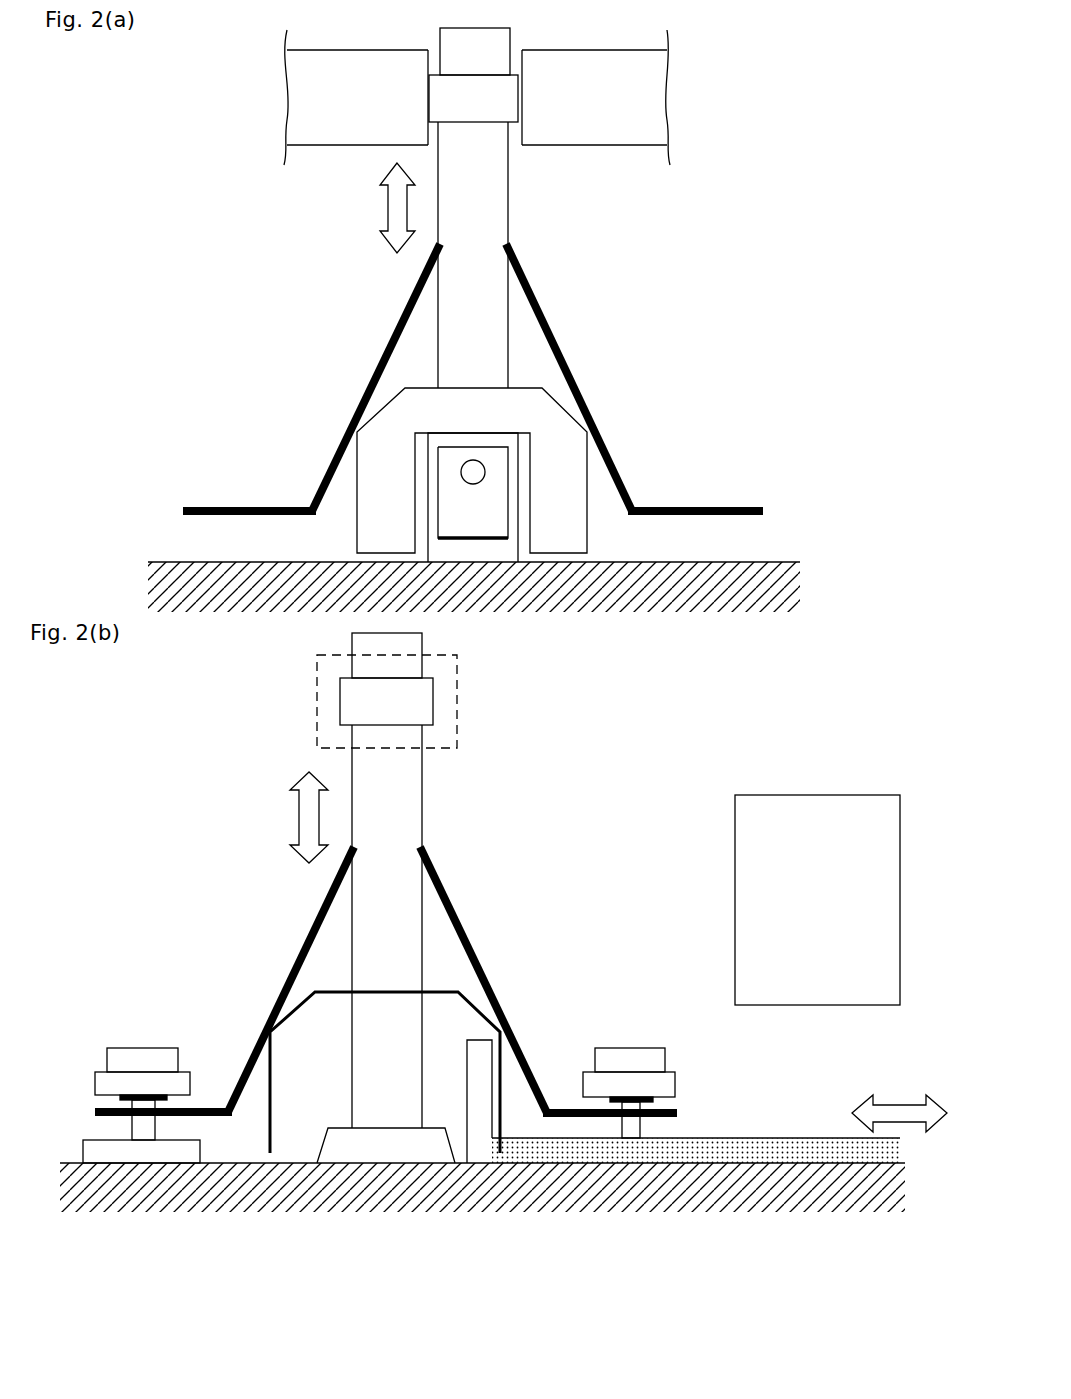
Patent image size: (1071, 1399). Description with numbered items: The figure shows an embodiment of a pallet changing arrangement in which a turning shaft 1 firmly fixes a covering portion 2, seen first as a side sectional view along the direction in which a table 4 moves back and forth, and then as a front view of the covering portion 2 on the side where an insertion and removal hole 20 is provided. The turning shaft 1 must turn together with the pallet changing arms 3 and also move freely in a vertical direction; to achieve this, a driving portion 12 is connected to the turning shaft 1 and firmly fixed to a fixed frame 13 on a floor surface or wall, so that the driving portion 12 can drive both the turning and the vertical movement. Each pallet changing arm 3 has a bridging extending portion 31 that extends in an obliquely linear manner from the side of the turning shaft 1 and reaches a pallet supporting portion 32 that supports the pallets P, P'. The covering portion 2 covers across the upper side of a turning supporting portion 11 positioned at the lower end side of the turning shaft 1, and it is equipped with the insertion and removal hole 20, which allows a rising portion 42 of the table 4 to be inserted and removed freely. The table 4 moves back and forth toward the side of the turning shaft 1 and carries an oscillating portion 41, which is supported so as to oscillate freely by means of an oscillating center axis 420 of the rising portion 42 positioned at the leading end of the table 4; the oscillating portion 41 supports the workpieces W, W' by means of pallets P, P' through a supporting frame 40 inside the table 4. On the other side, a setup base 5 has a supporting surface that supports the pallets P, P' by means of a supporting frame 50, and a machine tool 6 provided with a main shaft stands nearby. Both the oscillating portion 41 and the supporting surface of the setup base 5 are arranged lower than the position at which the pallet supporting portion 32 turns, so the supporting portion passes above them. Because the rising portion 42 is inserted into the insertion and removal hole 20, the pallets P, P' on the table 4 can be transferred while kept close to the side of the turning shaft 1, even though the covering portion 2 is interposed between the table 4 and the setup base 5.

In FIG. 2A, the turning shaft 1 is at (482, 197).
In FIG. 2B, the turning shaft 1 is at (395, 788).
In FIG. 2A, the driving portion 12 is at (480, 102).
In FIG. 2B, the driving portion 12 is at (398, 703).
In FIG. 2A, the fixed frame 13 is at (370, 120).
In FIG. 2B, the fixed frame 13 is at (317, 717).
In FIG. 2A, the covering portion 2 is at (477, 440).
In FIG. 2B, the covering portion 2 is at (403, 1045).
In FIG. 2A, the insertion and removal hole 20 is at (418, 457).
In FIG. 2B, the insertion and removal hole 20 is at (385, 1072).
In FIG. 2A, the pallet changing arm 3 is at (471, 377).
In FIG. 2B, the pallet changing arm 3 is at (386, 977).
In FIG. 2A, the bridging extending portion 31 is at (393, 328).
In FIG. 2B, the bridging extending portion 31 is at (297, 952).
In FIG. 2A, the pallet supporting portion 32 is at (471, 443).
In FIG. 2B, the pallet supporting portion 32 is at (228, 1107).
In FIG. 2B, the table 4 is at (712, 1125).
In FIG. 2B, the supporting frame 40 is at (630, 1120).
In FIG. 2A, the oscillating portion 41 is at (457, 537).
In FIG. 2B, the oscillating portion 41 is at (478, 1050).
In FIG. 2A, the rising portion 42 is at (515, 450).
In FIG. 2B, the rising portion 42 is at (487, 1040).
In FIG. 2A, the oscillating center axis 420 is at (485, 470).
In FIG. 2B, the setup base 5 is at (125, 1152).
In FIG. 2B, the supporting frame 50 is at (143, 1127).
In FIG. 2B, the machine tool 6 is at (765, 812).
In FIG. 2B, the turning supporting portion 11 is at (355, 1152).
In FIG. 2B, the pallet P is at (633, 1020).
In FIG. 2B, the workpiece W is at (630, 1013).
In FIG. 2B, the pallet P' is at (149, 1033).
In FIG. 2B, the workpiece W' is at (136, 1014).